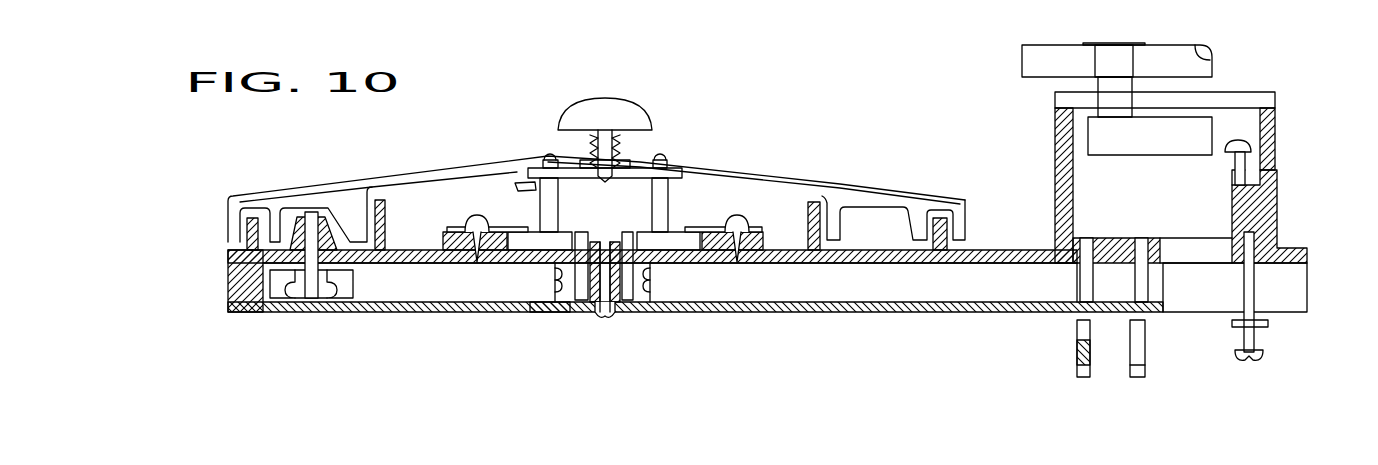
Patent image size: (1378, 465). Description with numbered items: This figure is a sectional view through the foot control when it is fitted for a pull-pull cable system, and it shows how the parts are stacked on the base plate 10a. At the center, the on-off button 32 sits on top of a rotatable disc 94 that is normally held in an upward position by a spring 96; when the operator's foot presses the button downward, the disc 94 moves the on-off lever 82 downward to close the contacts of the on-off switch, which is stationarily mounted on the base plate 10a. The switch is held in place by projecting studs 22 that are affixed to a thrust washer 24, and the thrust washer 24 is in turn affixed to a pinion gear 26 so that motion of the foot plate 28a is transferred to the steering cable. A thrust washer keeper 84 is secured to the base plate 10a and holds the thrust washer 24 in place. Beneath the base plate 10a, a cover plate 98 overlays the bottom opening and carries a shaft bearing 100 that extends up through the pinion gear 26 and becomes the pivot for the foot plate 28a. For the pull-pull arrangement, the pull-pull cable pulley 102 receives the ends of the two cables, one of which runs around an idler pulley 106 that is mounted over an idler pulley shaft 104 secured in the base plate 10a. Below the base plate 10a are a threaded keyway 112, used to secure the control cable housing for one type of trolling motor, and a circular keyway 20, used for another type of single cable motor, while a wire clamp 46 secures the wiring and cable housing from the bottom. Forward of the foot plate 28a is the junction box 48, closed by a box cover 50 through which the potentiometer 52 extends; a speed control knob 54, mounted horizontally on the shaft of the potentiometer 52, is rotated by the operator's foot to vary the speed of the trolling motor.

The base plate 10a is at (227, 300).
The circular keyway 20 is at (1140, 352).
The projecting studs 22 is at (658, 187).
The thrust washer 24 is at (660, 238).
The pinion gear 26 is at (628, 290).
The foot plate 28a is at (890, 200).
The on-off button 32 is at (612, 113).
The wire clamp 46 is at (1262, 324).
The box 48 is at (1265, 193).
The box cover 50 is at (1262, 100).
The potentiometer 52 is at (1192, 128).
The speed control knob 54 is at (1050, 62).
The on-off lever 82 is at (513, 180).
The thrust washer keeper 84 is at (697, 223).
The rotatable disc 94 is at (670, 174).
The spring 96 is at (592, 148).
The cover plate 98 is at (867, 312).
The shaft bearing 100 is at (593, 293).
The pull-pull cable pulley 102 is at (548, 308).
The idler pulley shaft 104 is at (312, 293).
The idler pulley 106 is at (290, 288).
The threaded keyway 112 is at (1080, 365).